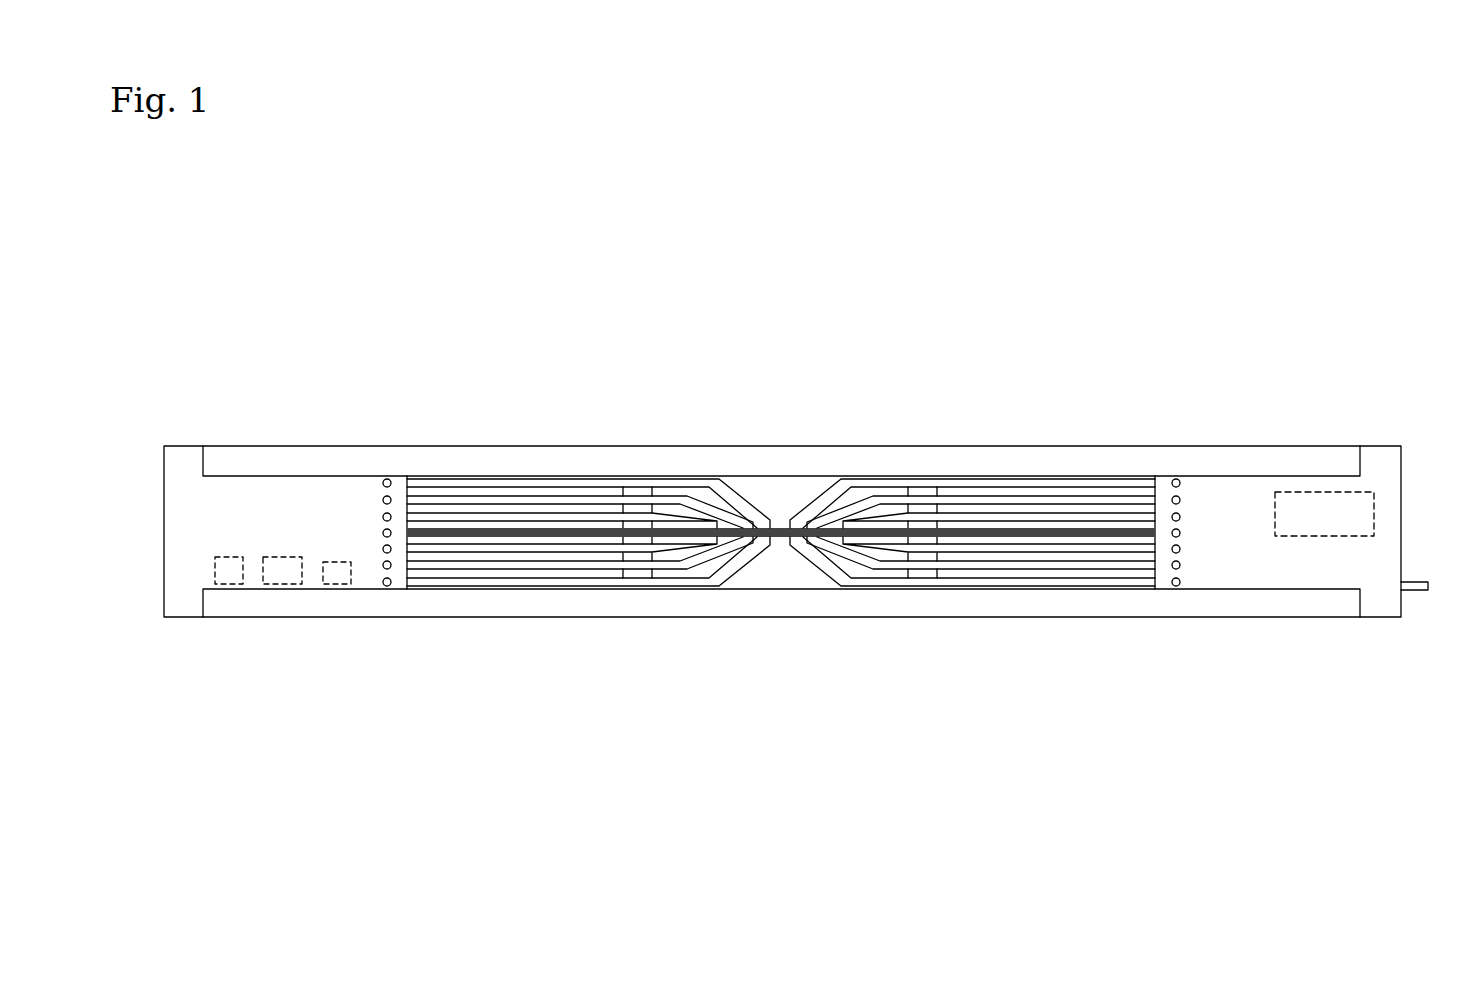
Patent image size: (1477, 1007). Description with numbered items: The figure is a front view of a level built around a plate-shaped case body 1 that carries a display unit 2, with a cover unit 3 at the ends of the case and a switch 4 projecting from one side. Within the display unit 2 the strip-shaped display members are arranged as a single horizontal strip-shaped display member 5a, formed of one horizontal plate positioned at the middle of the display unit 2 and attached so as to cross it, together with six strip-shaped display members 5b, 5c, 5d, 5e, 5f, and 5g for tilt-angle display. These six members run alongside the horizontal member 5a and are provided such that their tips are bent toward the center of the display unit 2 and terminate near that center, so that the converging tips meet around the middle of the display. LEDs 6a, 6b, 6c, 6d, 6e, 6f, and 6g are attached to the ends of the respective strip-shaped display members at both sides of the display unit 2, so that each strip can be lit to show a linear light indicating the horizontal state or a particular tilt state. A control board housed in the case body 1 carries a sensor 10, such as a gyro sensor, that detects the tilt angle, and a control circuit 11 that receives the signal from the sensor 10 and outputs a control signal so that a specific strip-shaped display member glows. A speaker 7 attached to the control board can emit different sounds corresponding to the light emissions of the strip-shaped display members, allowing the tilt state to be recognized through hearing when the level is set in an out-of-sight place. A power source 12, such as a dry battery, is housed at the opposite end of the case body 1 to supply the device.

The plate-shaped case body 1 is at (1052, 445).
The display unit 2 is at (781, 497).
The cover unit 3 is at (240, 500).
The switch 4 is at (1415, 592).
The horizontal strip-shaped display member 5a is at (780, 537).
The strip-shaped display member for tilt-angle display 5b is at (690, 517).
The strip-shaped display member for tilt-angle display 5c is at (717, 497).
The strip-shaped display member for tilt-angle display 5d is at (740, 487).
The strip-shaped display member for tilt-angle display 5e is at (882, 517).
The strip-shaped display member for tilt-angle display 5f is at (847, 502).
The strip-shaped display member for tilt-angle display 5g is at (810, 493).
The LED 6a is at (380, 530).
The LED 6b is at (383, 514).
The LED 6c is at (388, 497).
The LED 6d is at (390, 483).
The LED 6e is at (386, 587).
The LED 6f is at (386, 570).
The LED 6g is at (386, 554).
The speaker 7 is at (337, 588).
The sensor 10 is at (215, 570).
The control circuit 11 is at (275, 588).
The power source 12 is at (1365, 512).